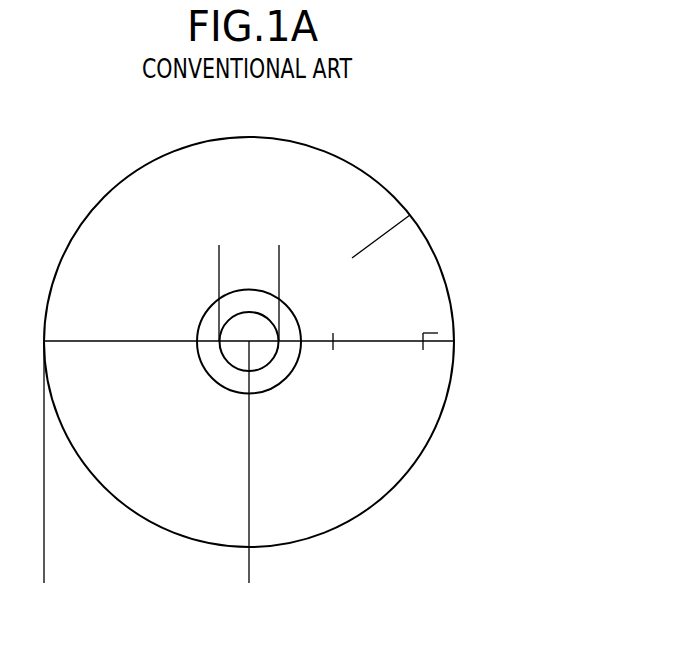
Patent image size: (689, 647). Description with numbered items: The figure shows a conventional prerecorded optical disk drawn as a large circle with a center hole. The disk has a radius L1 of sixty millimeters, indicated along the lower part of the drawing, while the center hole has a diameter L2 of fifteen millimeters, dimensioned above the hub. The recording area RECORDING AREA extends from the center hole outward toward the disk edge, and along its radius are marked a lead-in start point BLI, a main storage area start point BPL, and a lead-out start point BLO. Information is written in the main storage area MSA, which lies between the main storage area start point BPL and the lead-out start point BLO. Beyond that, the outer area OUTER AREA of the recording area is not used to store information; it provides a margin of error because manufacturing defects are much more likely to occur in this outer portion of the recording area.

The radius L1 is at (249, 570).
The diameter of the center hole L2 is at (323, 254).
The recording area RECORDING AREA is at (291, 304).
The outer area OUTER AREA is at (440, 332).
The lead-in start point BLI is at (303, 340).
The main storage area MSA is at (423, 333).
The main storage area start point BPL is at (333, 364).
The lead-out start point BLO is at (425, 364).